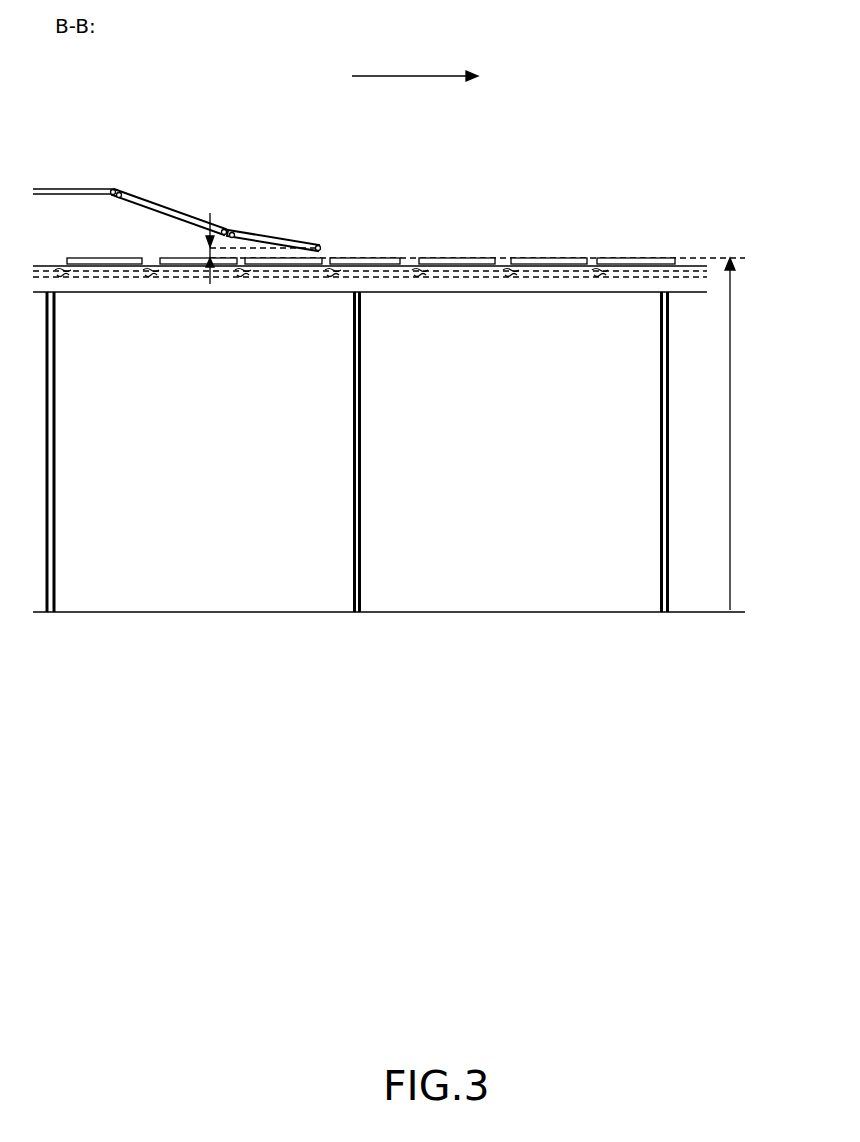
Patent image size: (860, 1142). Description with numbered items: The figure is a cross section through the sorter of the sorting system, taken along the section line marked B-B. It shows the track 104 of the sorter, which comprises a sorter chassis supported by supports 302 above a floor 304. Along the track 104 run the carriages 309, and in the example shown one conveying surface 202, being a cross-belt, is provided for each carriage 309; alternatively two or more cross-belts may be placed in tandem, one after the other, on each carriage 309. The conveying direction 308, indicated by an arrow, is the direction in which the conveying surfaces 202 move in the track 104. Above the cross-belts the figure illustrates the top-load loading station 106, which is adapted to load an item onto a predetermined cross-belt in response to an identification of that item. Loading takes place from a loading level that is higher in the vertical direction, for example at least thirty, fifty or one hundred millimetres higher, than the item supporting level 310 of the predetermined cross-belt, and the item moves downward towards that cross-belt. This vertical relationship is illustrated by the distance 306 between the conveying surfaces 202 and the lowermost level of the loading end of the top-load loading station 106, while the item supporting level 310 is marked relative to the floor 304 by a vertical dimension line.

The track 104 is at (692, 265).
The top-load loading station 106 is at (156, 168).
The conveying surface 202 is at (372, 257).
The supports 302 is at (55, 367).
The floor 304 is at (283, 612).
The distance 306 is at (208, 252).
The conveying direction 308 is at (415, 61).
The carriage 309 is at (383, 278).
The item supporting level 310 is at (732, 283).